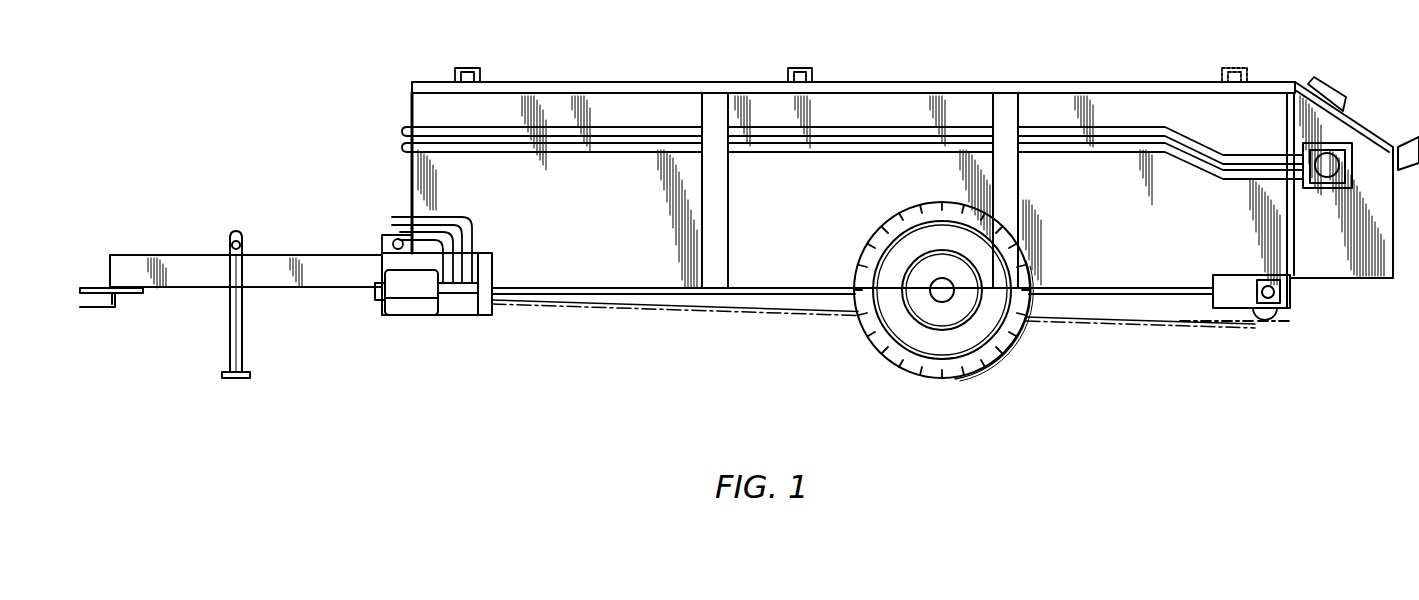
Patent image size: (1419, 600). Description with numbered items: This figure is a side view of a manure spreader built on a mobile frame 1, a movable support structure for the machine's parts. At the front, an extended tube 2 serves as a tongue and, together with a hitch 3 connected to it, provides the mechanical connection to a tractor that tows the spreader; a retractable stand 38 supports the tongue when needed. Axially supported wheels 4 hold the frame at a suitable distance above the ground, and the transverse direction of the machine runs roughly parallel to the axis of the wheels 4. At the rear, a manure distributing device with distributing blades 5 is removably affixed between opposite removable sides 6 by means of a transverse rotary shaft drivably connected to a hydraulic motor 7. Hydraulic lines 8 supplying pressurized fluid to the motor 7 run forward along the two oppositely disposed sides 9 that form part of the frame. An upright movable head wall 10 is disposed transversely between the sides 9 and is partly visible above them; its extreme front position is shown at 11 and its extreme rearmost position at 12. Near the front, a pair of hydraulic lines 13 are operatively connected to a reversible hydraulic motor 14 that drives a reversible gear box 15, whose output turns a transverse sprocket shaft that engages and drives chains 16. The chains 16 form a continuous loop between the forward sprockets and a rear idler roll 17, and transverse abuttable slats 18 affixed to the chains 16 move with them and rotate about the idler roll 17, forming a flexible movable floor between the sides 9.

The mobile frame 1 is at (805, 291).
The extended tube 2 is at (321, 291).
The hitch 3 is at (97, 310).
The wheels 4 is at (1020, 335).
The distributing blades 5 is at (1322, 82).
The removable sides 6 is at (1346, 268).
The hydraulic motor 7 is at (1357, 130).
The hydraulic lines 8 is at (435, 128).
The sides 9 is at (662, 115).
The head wall 10 is at (800, 66).
The extreme front position of head wall 11 is at (468, 66).
The extreme rear most position of head wall 12 is at (1233, 68).
The pair of hydraulic lines 13 is at (395, 220).
The reversible hydraulic motor 14 is at (470, 316).
The reversible gear box 15 is at (415, 316).
The chains 16 is at (726, 315).
The idler roll 17 is at (1245, 312).
The transverse abuttable slats 18 is at (1285, 322).
The retractable stand 38 is at (243, 317).